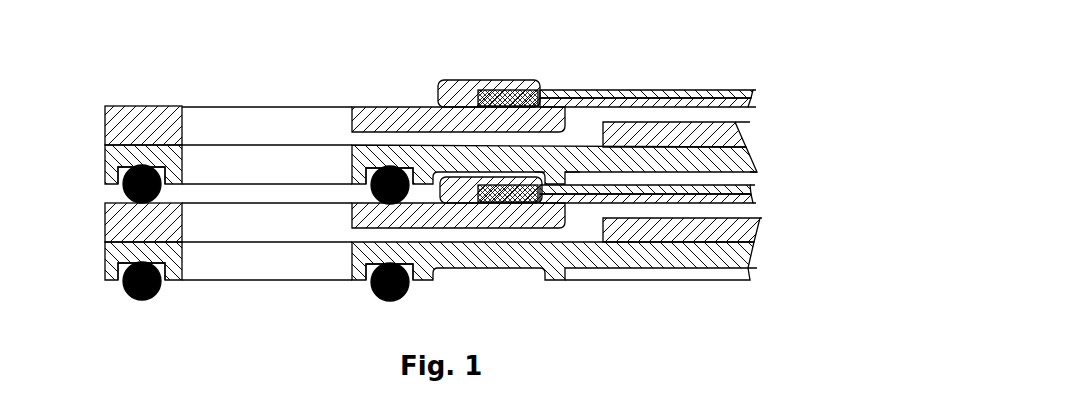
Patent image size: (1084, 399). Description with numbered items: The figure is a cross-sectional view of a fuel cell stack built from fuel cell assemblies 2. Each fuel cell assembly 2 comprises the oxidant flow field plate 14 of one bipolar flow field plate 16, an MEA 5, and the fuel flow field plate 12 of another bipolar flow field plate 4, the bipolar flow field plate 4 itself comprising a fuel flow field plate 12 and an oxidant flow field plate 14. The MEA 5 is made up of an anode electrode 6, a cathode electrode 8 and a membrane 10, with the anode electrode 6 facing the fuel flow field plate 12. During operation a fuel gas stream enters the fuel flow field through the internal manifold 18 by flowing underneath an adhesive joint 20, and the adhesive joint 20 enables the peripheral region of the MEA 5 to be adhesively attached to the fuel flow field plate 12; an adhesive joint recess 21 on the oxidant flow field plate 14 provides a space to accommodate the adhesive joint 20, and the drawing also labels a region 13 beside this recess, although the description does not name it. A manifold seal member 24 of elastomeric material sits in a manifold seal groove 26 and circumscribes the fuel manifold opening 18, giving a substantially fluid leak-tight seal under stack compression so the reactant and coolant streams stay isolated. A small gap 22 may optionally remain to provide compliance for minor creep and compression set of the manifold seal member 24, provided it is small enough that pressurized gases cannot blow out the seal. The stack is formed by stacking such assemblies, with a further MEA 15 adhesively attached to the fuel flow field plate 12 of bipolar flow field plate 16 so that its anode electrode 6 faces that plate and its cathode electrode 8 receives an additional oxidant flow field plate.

The fuel cell assembly 2 is at (92, 150).
The bipolar flow field plate 4 is at (757, 208).
The MEA 5 is at (763, 185).
The anode electrode 6 is at (737, 100).
The cathode electrode 8 is at (705, 92).
The membrane 10 is at (750, 198).
The fuel flow field plate 12 is at (658, 127).
The gap 13 is at (572, 172).
The oxidant flow field plate 14 is at (610, 160).
The MEA 15 is at (762, 88).
The bipolar flow field plate 16 is at (760, 122).
The internal manifold 18 is at (337, 104).
The adhesive joint 20 is at (452, 193).
The adhesive joint recess 21 is at (537, 172).
The gap 22 is at (452, 171).
The manifold seal member 24 is at (363, 195).
The manifold seal groove 26 is at (365, 169).